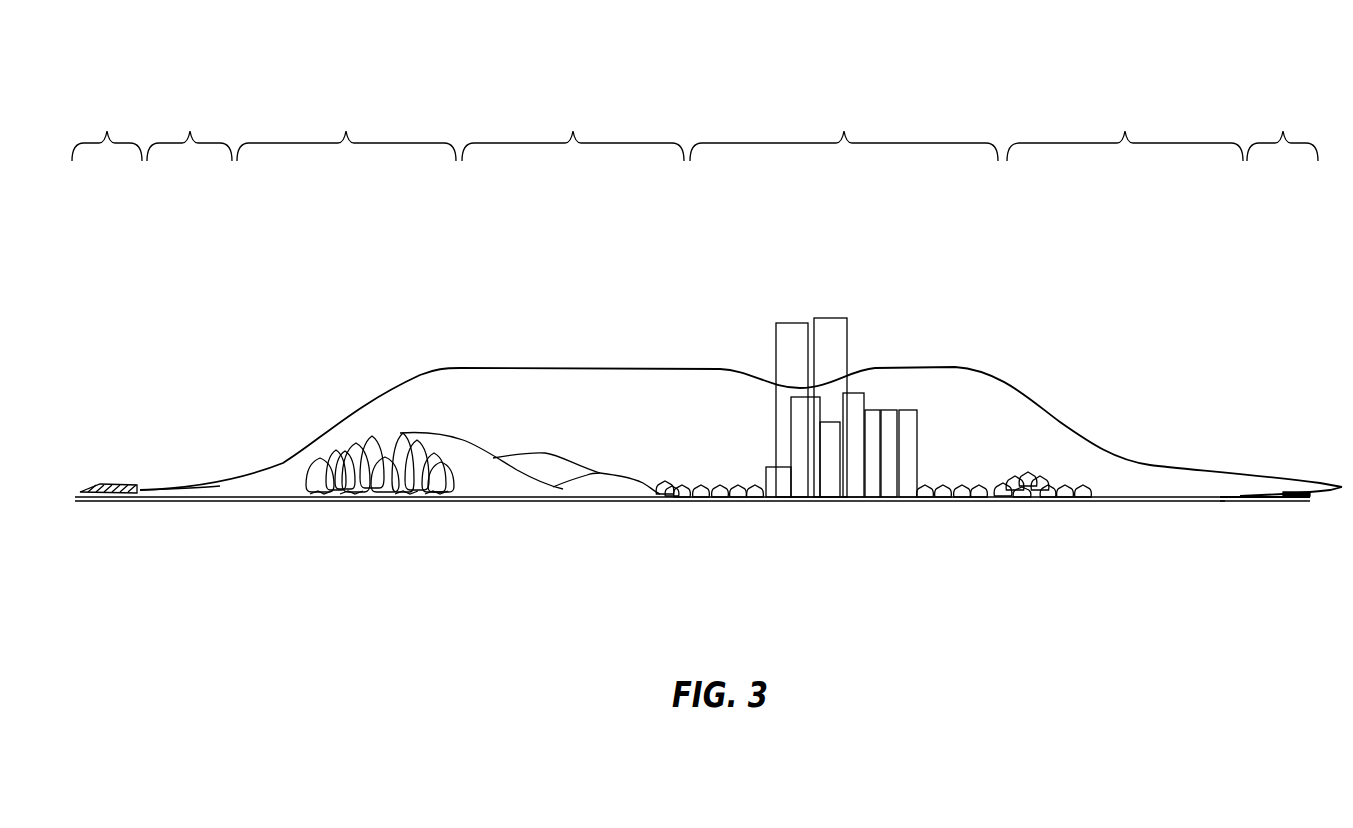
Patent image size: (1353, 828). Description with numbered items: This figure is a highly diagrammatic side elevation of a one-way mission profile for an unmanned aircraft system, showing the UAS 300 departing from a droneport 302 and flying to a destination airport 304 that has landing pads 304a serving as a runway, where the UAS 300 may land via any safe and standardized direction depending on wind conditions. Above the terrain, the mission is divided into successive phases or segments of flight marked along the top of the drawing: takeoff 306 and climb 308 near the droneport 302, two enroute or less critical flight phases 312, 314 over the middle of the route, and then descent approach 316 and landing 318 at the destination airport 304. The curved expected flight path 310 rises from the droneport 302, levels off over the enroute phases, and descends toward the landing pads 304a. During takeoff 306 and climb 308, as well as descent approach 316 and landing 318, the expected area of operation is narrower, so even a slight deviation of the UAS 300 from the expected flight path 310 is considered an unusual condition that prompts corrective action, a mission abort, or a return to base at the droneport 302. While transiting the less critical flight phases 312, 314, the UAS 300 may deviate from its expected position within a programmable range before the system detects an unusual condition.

The UAS 300 is at (102, 499).
The droneport 302 is at (107, 131).
The destination airport 304 is at (1312, 452).
The landing pads 304a is at (1263, 500).
The takeoff 306 is at (186, 295).
The climb 308 is at (346, 297).
The expected flight path 310 is at (600, 368).
The less critical flight phase 312 is at (581, 299).
The less critical flight phase 314 is at (844, 299).
The descent approach 316 is at (1080, 299).
The landing 318 is at (1282, 131).